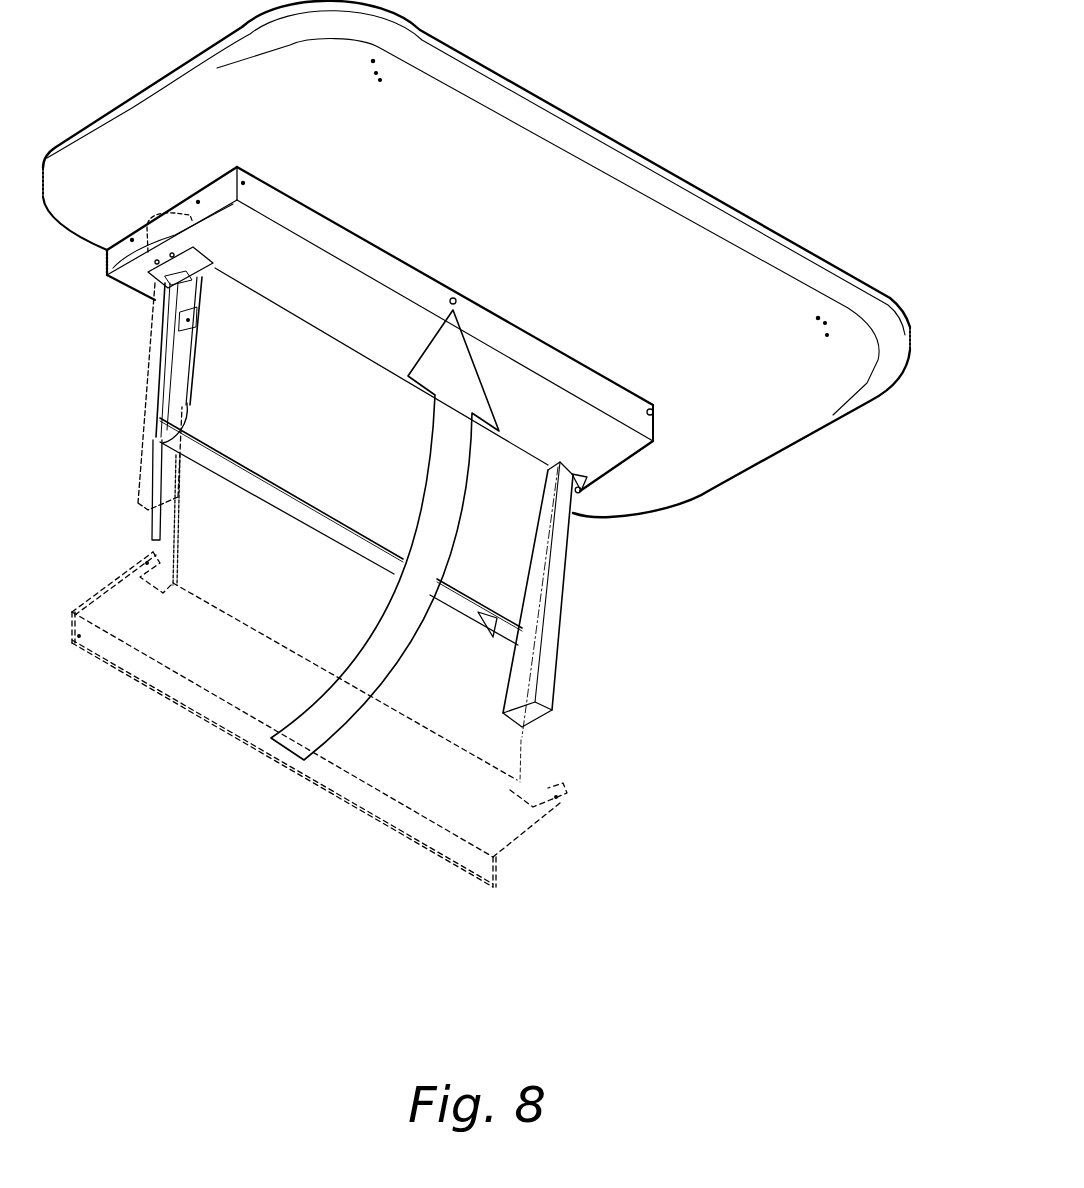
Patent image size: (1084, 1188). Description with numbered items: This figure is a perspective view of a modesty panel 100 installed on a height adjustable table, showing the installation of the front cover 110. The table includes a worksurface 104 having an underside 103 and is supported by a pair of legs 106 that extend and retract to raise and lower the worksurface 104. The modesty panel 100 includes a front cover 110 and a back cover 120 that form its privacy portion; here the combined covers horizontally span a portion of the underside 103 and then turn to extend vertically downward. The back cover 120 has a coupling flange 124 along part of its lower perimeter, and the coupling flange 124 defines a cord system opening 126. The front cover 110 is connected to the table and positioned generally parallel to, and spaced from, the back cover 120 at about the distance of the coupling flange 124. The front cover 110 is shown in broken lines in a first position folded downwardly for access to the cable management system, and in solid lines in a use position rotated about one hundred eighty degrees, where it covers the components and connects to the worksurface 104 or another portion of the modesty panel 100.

The modesty panel 100 is at (295, 520).
The underside of worksurface 103 is at (753, 427).
The worksurface 104 is at (912, 325).
The legs 106 is at (552, 652).
The front cover 110 is at (540, 578).
The back cover 120 is at (167, 360).
The coupling flange 124 is at (237, 478).
The cord system opening 126 is at (163, 437).